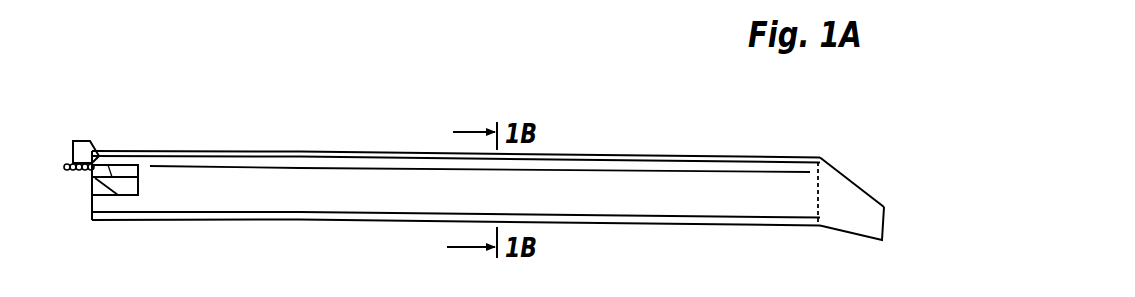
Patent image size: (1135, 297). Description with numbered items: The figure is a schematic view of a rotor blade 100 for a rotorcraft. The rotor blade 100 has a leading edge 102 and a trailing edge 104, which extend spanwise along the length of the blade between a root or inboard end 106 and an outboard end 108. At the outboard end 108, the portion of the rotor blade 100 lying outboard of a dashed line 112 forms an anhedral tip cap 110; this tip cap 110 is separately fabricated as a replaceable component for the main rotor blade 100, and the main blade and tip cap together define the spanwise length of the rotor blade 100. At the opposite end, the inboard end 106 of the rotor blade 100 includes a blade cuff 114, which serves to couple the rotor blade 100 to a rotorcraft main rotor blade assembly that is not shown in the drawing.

The rotor blade 100 is at (190, 105).
The leading edge 102 is at (353, 151).
The trailing edge 104 is at (362, 221).
The inboard end 106 is at (107, 224).
The outboard end 108 is at (798, 150).
The anhedral tip cap 110 is at (848, 198).
The dashed line 112 is at (818, 195).
The blade cuff 114 is at (108, 162).